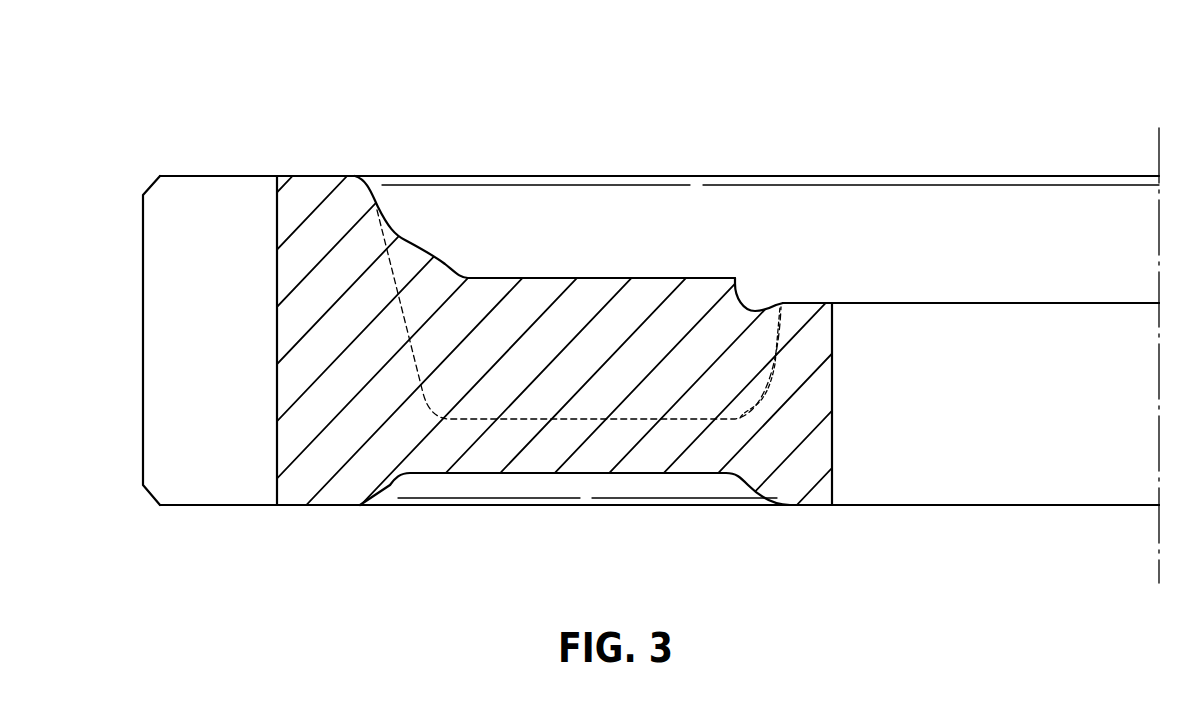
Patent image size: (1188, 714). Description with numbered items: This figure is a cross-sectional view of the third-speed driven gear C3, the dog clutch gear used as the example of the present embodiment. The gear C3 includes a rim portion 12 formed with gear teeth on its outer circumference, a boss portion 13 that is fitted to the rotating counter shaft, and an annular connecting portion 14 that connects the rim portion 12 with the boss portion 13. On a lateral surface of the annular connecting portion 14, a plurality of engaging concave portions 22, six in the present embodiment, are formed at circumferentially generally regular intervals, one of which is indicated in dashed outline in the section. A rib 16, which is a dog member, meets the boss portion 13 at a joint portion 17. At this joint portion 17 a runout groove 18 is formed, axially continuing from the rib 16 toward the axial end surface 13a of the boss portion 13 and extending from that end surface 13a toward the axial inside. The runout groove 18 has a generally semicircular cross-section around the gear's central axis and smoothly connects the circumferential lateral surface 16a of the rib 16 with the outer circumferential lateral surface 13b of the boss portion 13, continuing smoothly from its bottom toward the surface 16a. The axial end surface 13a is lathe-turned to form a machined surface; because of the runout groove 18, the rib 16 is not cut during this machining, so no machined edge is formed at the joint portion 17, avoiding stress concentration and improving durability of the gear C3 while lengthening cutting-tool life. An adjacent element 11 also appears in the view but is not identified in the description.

The first member 11 is at (187, 292).
The rim portion 12 is at (340, 330).
The boss portion 13 is at (800, 393).
The axial end surface of the boss portion 13a is at (807, 303).
The outer circumferential lateral surface of the boss portion 13b is at (740, 418).
The annular connecting portion 14 is at (586, 453).
The rib 16 is at (535, 303).
The circumferential lateral surface of the rib 16a is at (752, 306).
The joint portion 17 is at (762, 333).
The runout groove 18 is at (758, 308).
The engaging concave portion 22 is at (645, 404).
The third-speed driven gear C3 is at (219, 93).